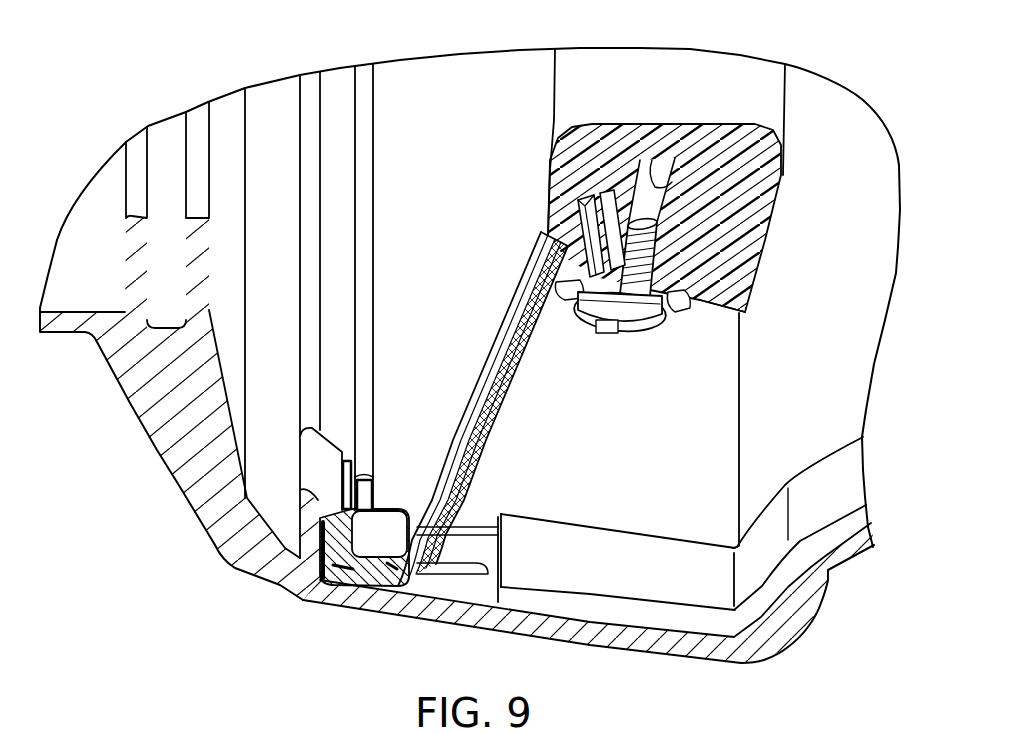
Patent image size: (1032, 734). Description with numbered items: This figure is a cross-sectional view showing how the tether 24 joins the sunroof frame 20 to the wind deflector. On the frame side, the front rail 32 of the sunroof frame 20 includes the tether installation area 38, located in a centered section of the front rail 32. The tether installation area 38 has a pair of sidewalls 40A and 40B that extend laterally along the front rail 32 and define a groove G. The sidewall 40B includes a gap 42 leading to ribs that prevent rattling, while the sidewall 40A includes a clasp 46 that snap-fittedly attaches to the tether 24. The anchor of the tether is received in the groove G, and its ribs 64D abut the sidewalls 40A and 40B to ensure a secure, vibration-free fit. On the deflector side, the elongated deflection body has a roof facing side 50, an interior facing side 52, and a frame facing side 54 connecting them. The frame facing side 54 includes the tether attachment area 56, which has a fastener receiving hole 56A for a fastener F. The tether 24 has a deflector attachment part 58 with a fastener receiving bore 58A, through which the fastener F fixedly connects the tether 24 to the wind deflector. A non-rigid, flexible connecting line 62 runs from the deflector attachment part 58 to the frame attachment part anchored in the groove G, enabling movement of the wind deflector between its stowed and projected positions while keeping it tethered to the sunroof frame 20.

The sunroof frame 20 is at (136, 421).
The tether 24 is at (437, 110).
The front rail 32 is at (197, 470).
The tether installation area 38 is at (470, 554).
The sidewall 40A is at (330, 164).
The sidewall 40B is at (373, 205).
The gap 42 is at (463, 524).
The clasp 46 is at (310, 468).
The roof facing side 50 is at (722, 88).
The interior facing side 52 is at (762, 247).
The frame facing side 54 is at (716, 306).
The tether attachment area 56 is at (713, 338).
The fastener receiving hole 56A is at (656, 158).
The deflector attachment part 58 is at (681, 314).
The fastener receiving bore 58A is at (592, 323).
The connecting line 62 is at (513, 306).
The ribs 64D is at (318, 548).
The groove G is at (337, 265).
The fastener F is at (636, 340).